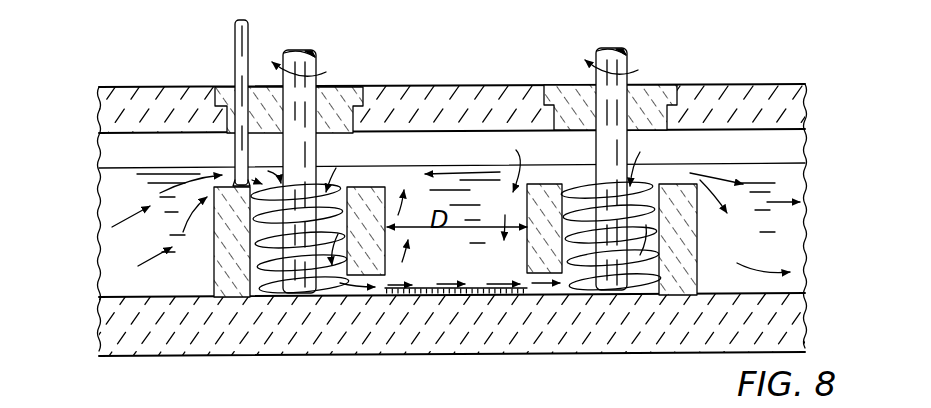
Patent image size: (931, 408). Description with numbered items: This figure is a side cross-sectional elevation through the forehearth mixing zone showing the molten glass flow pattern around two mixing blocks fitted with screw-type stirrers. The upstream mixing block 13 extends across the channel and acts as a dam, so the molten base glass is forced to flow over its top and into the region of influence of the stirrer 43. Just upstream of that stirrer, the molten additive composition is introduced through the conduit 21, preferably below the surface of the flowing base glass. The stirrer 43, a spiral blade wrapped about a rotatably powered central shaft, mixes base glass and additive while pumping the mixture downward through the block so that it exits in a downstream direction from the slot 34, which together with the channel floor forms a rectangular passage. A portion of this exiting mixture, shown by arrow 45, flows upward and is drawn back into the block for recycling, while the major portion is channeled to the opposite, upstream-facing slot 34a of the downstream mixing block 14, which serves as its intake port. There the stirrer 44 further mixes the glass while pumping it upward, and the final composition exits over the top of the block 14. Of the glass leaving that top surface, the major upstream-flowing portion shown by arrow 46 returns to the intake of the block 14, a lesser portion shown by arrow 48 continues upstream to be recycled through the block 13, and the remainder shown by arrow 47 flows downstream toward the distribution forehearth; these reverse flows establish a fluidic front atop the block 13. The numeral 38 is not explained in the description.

The conduit 21 is at (235, 42).
The liquid bath 38 is at (126, 167).
The upstream mixing block 13 is at (214, 272).
The mixing block 14 is at (697, 252).
The screw-type stirrer 43 is at (343, 148).
The arrow 45 is at (389, 183).
The arrow 48 is at (430, 176).
The arrow 46 is at (504, 188).
The screw-type stirrer 44 is at (650, 161).
The arrow 47 is at (718, 175).
The slot 34 is at (366, 285).
The slot 34a is at (545, 285).